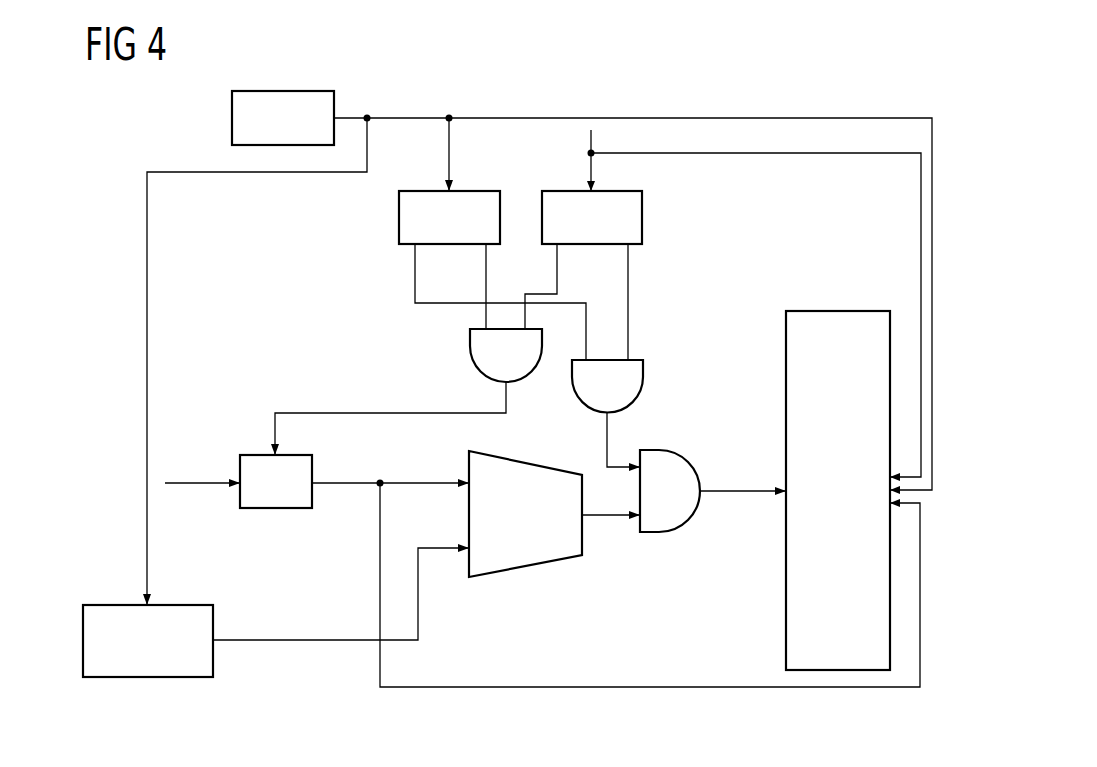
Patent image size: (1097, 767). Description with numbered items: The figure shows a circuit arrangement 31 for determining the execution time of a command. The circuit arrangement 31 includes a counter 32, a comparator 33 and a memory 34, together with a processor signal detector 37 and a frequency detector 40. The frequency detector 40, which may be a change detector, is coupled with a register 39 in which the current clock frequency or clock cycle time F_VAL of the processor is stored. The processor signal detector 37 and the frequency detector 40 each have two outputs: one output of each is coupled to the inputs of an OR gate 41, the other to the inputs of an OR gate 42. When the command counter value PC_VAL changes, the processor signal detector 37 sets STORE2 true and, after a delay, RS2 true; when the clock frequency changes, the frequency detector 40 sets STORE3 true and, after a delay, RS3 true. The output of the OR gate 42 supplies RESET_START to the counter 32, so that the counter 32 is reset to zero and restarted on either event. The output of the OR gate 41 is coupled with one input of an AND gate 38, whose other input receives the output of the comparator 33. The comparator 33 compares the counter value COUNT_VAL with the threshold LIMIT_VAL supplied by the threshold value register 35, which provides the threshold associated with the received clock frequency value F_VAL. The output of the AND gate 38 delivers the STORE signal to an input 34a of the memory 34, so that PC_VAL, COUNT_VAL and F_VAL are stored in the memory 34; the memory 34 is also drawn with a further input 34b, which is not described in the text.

The circuit arrangement 31 is at (799, 98).
The counter 32 is at (275, 508).
The comparator 33 is at (527, 567).
The memory 34 is at (838, 460).
The input of memory 34a is at (808, 490).
The second memory area 34b is at (868, 490).
The threshold value register 35 is at (148, 677).
The processor signal detector 37 is at (642, 217).
The AND gate 38 is at (678, 525).
The register 39 is at (232, 118).
The frequency detector 40 is at (399, 218).
The OR gate 41 is at (638, 387).
The OR gate 42 is at (522, 382).